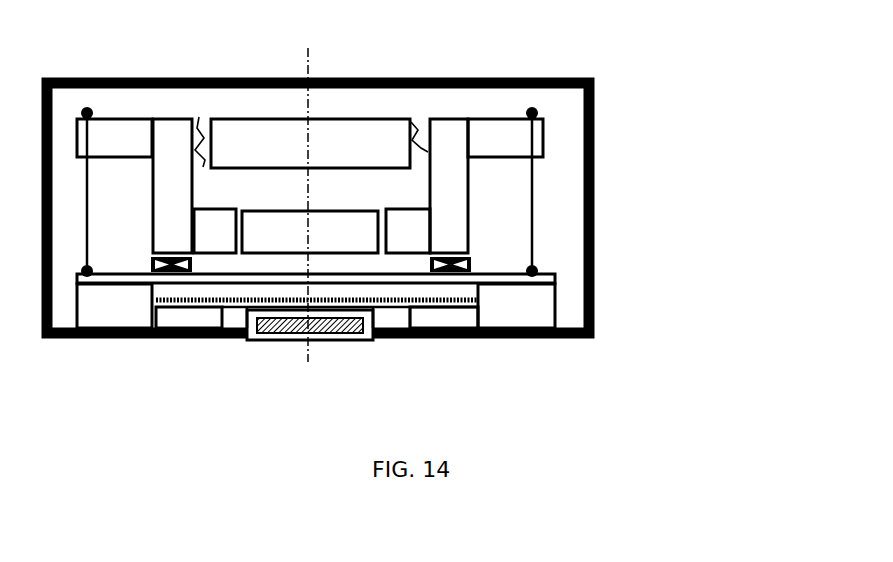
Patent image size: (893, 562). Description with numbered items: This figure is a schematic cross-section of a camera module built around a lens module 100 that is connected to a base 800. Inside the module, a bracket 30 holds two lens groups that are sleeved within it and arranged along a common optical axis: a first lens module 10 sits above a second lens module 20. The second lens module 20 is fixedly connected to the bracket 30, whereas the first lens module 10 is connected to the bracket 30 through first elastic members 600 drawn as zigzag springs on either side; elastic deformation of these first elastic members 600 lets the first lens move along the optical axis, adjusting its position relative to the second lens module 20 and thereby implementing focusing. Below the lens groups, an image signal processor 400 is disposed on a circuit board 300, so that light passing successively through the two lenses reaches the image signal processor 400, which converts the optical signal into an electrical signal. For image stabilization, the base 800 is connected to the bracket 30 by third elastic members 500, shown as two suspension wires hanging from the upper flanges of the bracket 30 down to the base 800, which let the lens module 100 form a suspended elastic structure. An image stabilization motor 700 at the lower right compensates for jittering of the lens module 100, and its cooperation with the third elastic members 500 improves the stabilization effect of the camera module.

The first lens module 10 is at (258, 132).
The second lens module 20 is at (268, 240).
The bracket 30 is at (168, 132).
The lens module 100 is at (357, 92).
The circuit board 300 is at (595, 148).
The image signal processor 400 is at (343, 330).
The third elastic member 500 is at (534, 212).
The first elastic member 600 is at (422, 160).
The image stabilization motor 700 is at (492, 288).
The base 800 is at (595, 312).